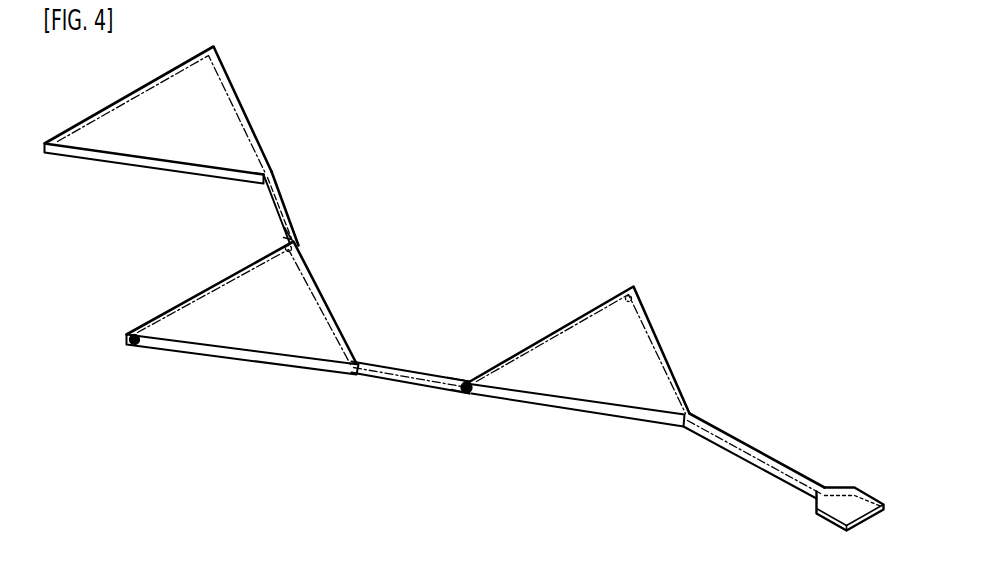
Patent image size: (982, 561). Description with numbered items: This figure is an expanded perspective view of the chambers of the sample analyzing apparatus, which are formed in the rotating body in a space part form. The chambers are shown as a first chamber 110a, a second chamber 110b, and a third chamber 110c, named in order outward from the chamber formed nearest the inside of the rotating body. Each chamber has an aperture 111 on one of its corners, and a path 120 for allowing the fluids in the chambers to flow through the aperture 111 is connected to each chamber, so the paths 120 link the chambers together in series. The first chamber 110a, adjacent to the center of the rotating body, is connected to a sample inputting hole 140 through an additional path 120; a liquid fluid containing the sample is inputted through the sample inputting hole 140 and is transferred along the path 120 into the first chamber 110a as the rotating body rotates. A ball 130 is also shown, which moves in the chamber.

The first chamber 110a is at (647, 350).
The second chamber 110b is at (322, 300).
The third chamber 110c is at (226, 105).
The aperture 111 is at (282, 229).
The path 120 is at (282, 212).
The ball 130 is at (473, 390).
The sample inputting hole 140 is at (840, 512).